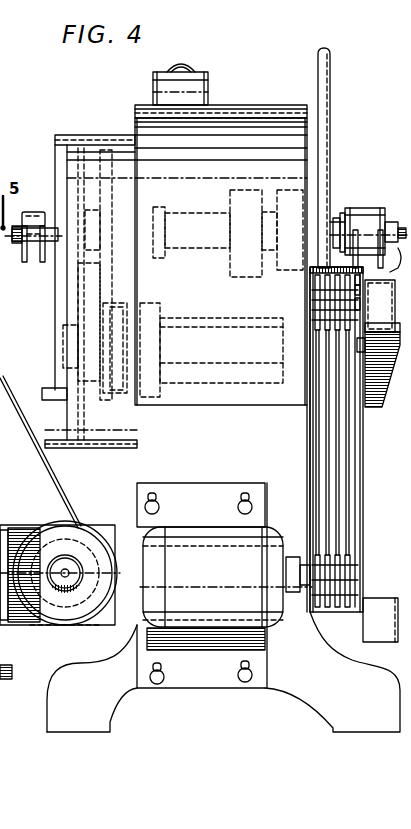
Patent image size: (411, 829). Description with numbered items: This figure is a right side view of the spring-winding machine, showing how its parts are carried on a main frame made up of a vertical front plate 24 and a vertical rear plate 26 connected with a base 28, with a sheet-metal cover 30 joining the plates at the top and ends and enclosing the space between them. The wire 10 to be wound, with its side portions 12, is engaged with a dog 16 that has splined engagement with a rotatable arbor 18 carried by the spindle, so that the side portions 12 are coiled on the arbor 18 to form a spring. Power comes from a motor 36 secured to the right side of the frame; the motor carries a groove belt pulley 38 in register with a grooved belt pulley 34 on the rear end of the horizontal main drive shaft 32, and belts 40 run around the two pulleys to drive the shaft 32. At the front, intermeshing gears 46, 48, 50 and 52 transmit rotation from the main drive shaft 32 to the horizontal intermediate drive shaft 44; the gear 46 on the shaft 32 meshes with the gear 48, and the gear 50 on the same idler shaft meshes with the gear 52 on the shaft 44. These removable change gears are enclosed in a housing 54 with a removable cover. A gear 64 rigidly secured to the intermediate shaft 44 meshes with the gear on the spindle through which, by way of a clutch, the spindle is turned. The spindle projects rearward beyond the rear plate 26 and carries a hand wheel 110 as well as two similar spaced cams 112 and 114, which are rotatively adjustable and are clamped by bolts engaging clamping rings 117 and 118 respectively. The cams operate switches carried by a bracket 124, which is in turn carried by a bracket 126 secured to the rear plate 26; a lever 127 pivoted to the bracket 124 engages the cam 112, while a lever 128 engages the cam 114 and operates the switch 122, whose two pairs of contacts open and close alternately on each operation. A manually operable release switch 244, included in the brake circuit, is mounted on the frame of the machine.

The wire 10 is at (54, 212).
The side portions 12 is at (44, 252).
The dog 16 is at (24, 211).
The arbor 18 is at (18, 251).
The front plate 24 is at (134, 121).
The release switch 244 is at (185, 63).
The rear plate 26 is at (307, 147).
The base 28 is at (88, 672).
The cover 30 is at (253, 106).
The main drive shaft 32 is at (195, 326).
The grooved belt pulley 34 is at (310, 410).
The motor 36 is at (202, 536).
The groove belt pulley 38 is at (358, 563).
The belts 40 is at (342, 452).
The intermediate drive shaft 44 is at (186, 221).
The gear 46 is at (80, 367).
The gear 48 is at (84, 290).
The gear 50 is at (100, 434).
The gear 52 is at (106, 194).
The housing 54 is at (77, 145).
The gear 64 is at (226, 254).
The hand wheel 110 is at (332, 66).
The cam 112 is at (343, 212).
The cam 114 is at (385, 208).
The clamping ring 117 is at (344, 221).
The clamping ring 118 is at (381, 306).
The switch 122 is at (360, 305).
The bracket 124 is at (358, 281).
The bracket 126 is at (378, 372).
The lever 127 is at (355, 232).
The lever 128 is at (360, 290).